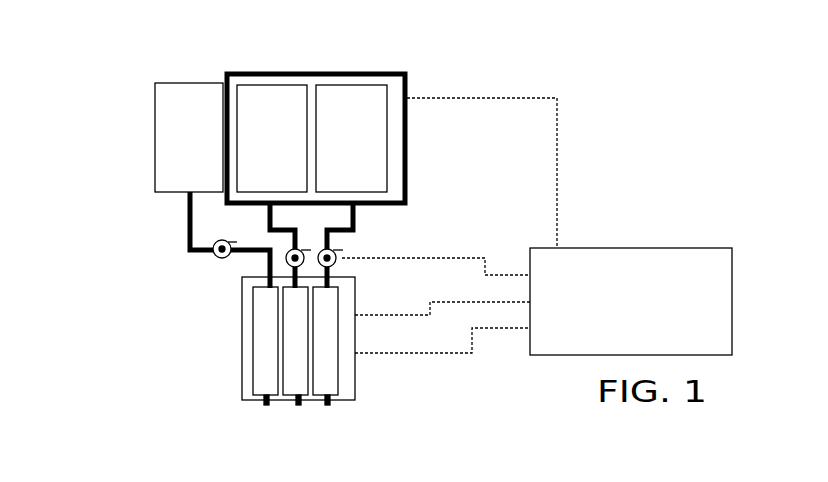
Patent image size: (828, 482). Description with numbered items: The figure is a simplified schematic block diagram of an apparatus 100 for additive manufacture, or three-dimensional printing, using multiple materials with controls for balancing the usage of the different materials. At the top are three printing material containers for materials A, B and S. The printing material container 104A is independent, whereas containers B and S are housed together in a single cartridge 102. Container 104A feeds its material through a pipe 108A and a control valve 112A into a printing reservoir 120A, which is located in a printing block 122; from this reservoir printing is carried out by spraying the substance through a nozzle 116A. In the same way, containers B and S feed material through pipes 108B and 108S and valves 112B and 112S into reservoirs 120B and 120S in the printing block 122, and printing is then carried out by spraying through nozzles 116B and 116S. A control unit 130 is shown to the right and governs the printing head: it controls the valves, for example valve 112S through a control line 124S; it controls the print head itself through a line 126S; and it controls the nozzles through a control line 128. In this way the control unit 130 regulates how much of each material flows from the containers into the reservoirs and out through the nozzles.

The apparatus 100 is at (442, 152).
The single cartridge 102 is at (407, 95).
The printing material container 104A is at (190, 83).
The pipe 108A is at (188, 203).
The pipe 108B is at (280, 229).
The pipe 108S is at (347, 229).
The control valve 112A is at (218, 260).
The valve 112B is at (290, 266).
The valve 112S is at (321, 266).
The nozzle 116A is at (264, 404).
The nozzle 116B is at (310, 403).
The nozzle 116S is at (333, 403).
The printing reservoir 120A is at (252, 343).
The reservoir 120B is at (298, 370).
The reservoir 120S is at (332, 370).
The printing block 122 is at (242, 362).
The control line 124S is at (392, 257).
The line 126S is at (453, 300).
The control line 128 is at (435, 355).
The control unit 130 is at (631, 301).